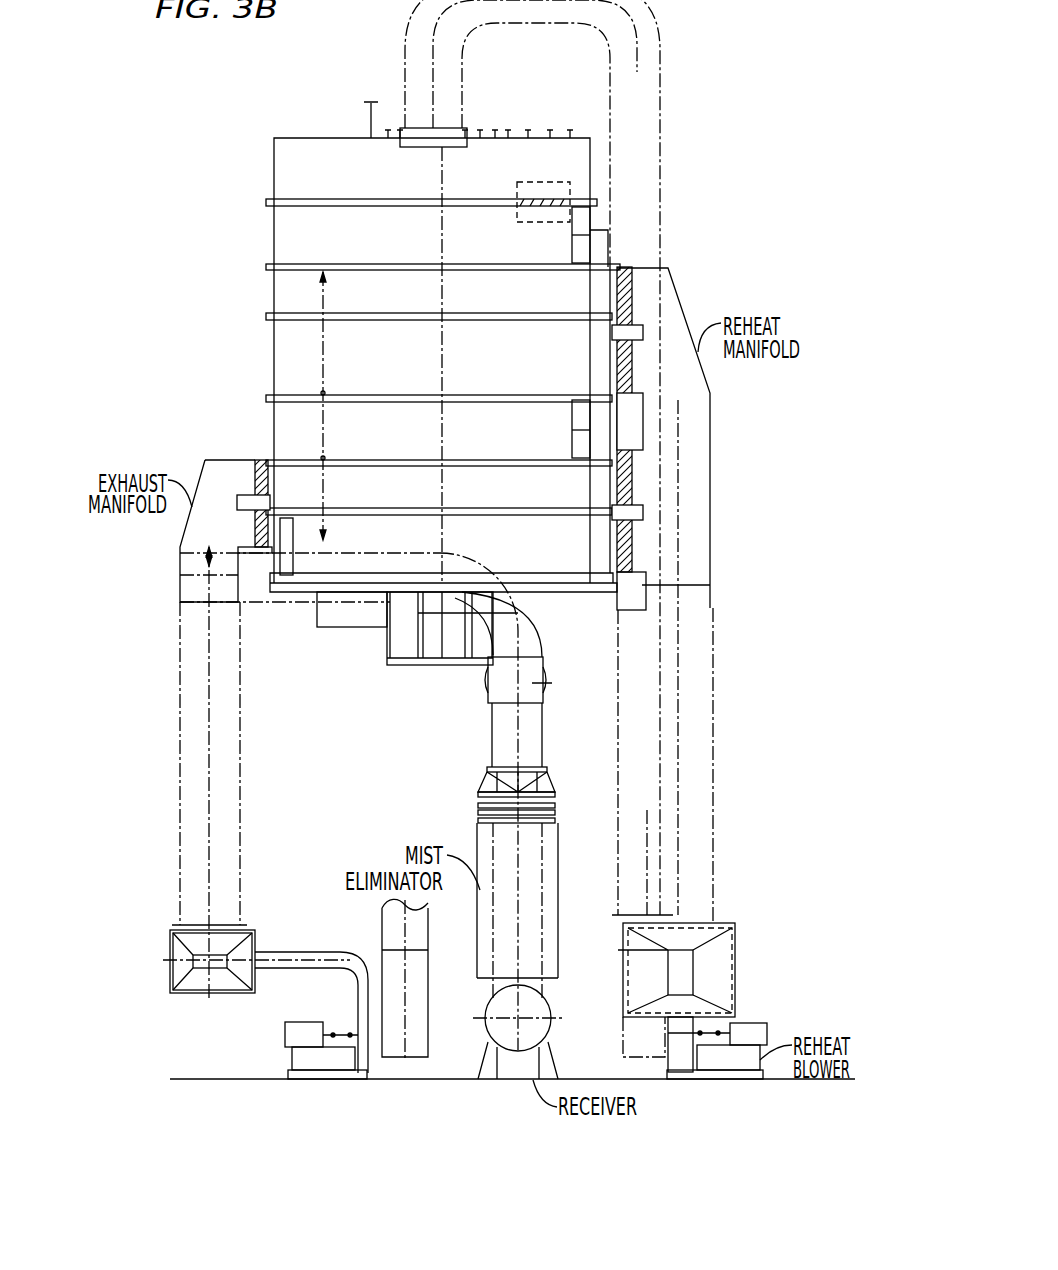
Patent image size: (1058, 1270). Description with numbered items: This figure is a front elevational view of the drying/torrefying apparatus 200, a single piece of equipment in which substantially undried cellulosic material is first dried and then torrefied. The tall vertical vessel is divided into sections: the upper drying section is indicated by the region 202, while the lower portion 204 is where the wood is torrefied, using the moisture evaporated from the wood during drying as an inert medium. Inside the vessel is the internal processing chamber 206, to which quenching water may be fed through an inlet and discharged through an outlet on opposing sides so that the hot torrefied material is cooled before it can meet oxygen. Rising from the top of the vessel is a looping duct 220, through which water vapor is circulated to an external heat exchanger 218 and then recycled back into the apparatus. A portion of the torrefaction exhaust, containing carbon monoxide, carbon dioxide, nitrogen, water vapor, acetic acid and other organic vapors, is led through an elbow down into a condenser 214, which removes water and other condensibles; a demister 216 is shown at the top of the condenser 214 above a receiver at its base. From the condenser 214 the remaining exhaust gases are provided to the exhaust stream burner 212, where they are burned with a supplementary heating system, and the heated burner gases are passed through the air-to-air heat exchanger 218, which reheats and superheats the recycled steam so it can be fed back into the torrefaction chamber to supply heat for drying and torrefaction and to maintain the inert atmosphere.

The apparatus 200 is at (697, 101).
The upper tower section 202 is at (382, 251).
The lower portion 204 is at (392, 443).
The internal processing chamber 206 is at (355, 355).
The burner 212 is at (185, 990).
The condenser 214 is at (493, 850).
The demister 216 is at (482, 788).
The heat exchanger 218 is at (725, 923).
The duct 220 is at (648, 17).